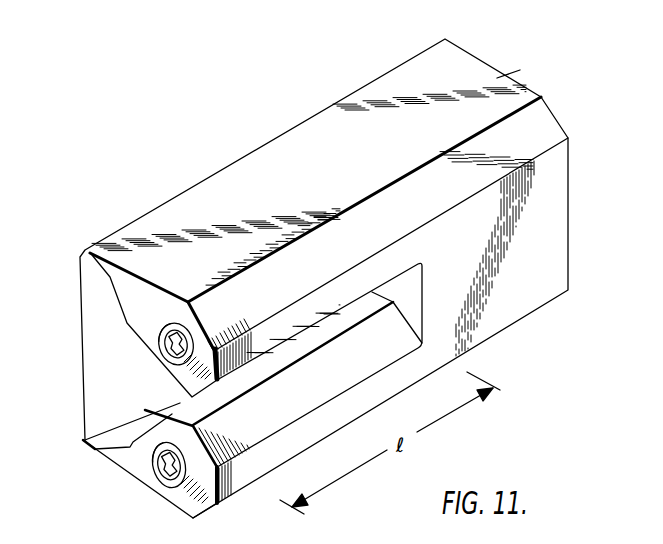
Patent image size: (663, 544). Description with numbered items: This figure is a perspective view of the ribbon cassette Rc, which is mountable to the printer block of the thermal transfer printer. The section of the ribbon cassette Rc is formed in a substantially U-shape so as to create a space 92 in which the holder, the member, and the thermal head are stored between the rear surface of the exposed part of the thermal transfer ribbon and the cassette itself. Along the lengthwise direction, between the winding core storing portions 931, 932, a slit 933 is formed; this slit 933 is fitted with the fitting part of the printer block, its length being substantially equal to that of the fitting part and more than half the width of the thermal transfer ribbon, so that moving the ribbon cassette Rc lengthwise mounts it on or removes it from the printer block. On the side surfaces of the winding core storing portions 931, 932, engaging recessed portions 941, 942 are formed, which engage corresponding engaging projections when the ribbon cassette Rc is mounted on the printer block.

The space 92 is at (120, 365).
The winding core storing portion 931 is at (110, 277).
The winding core storing portion 932 is at (137, 463).
The slit 933 is at (180, 403).
The engaging recessed portion 941 is at (170, 326).
The engaging recessed portion 942 is at (168, 482).
The ribbon cassette Rc is at (497, 78).